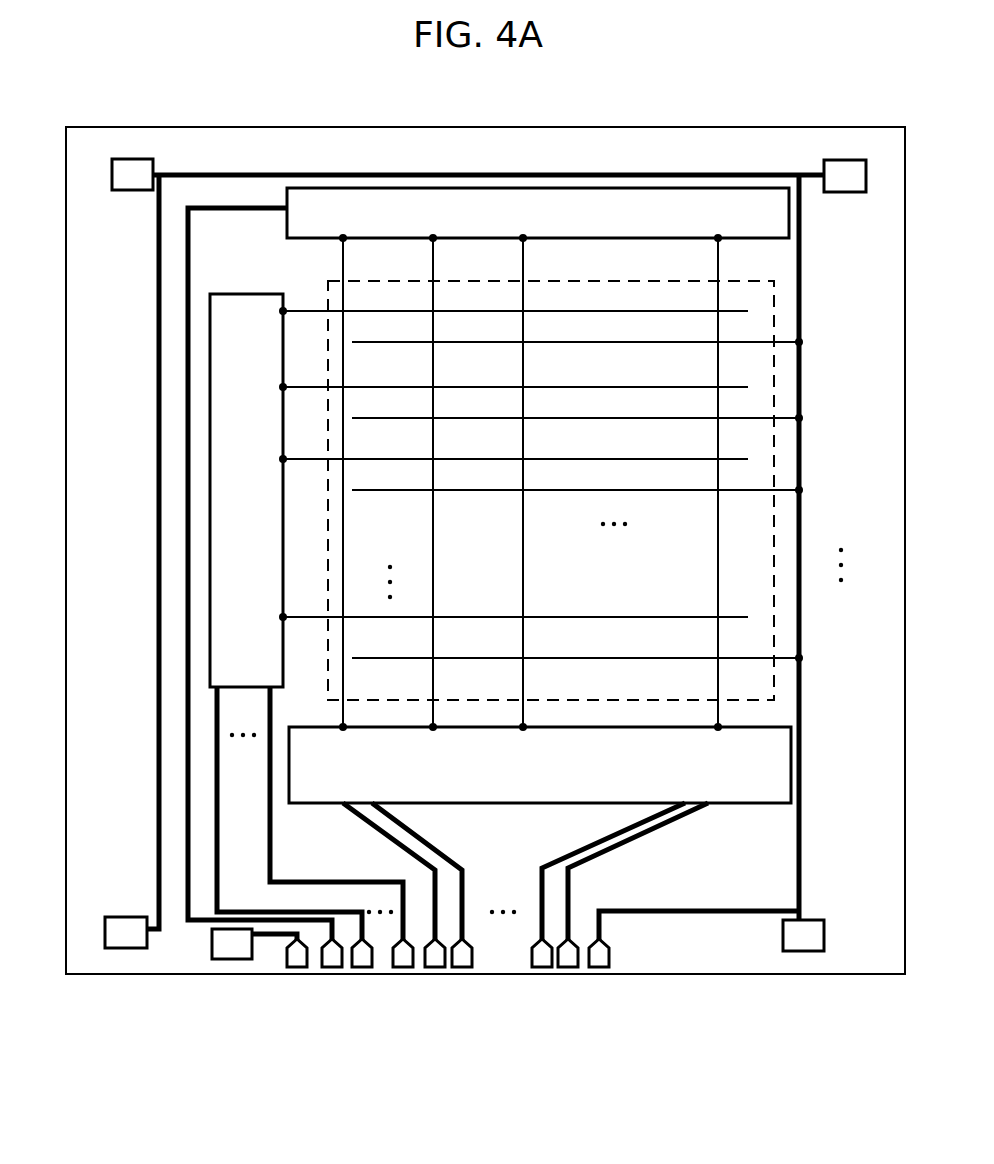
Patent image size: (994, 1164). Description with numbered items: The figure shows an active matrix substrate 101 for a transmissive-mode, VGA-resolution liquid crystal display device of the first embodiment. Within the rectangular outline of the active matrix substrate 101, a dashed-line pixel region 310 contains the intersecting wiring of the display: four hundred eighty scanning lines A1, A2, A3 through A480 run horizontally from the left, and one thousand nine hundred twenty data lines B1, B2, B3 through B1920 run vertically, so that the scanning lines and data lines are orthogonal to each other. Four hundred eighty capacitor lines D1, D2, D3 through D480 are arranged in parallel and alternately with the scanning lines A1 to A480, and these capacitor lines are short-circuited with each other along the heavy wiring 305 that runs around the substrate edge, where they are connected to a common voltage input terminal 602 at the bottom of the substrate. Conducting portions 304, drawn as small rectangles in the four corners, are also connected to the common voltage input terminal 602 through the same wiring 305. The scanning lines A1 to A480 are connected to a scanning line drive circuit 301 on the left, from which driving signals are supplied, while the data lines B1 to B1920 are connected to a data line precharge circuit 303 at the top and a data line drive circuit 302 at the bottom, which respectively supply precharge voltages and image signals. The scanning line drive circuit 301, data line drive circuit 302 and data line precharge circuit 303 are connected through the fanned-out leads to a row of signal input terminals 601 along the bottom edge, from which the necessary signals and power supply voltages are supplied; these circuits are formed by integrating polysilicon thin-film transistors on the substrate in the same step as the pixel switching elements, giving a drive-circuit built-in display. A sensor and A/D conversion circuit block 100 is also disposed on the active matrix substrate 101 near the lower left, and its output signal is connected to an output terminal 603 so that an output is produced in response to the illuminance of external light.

The active matrix substrate 101 is at (710, 102).
The sensor and A/D conversion circuit block 100 is at (212, 937).
The scanning line drive circuit 301 is at (240, 293).
The data line drive circuit 302 is at (310, 785).
The data line precharge circuit 303 is at (390, 187).
The conducting portion 304 is at (132, 192).
The wiring 305 is at (158, 428).
The pixel region 310 is at (778, 676).
The signal input terminal 601 is at (581, 965).
The common voltage input terminal 602 is at (601, 968).
The output terminal 603 is at (288, 956).
The scanning line A1 is at (350, 313).
The scanning line A2 is at (350, 389).
The scanning line A3 is at (348, 461).
The scanning line A480 is at (350, 619).
The data line B1 is at (343, 548).
The data line B2 is at (433, 548).
The data line B3 is at (523, 548).
The data line B1920 is at (718, 572).
The capacitor line D1 is at (800, 344).
The capacitor line D2 is at (800, 420).
The capacitor line D3 is at (800, 492).
The capacitor line D480 is at (800, 656).